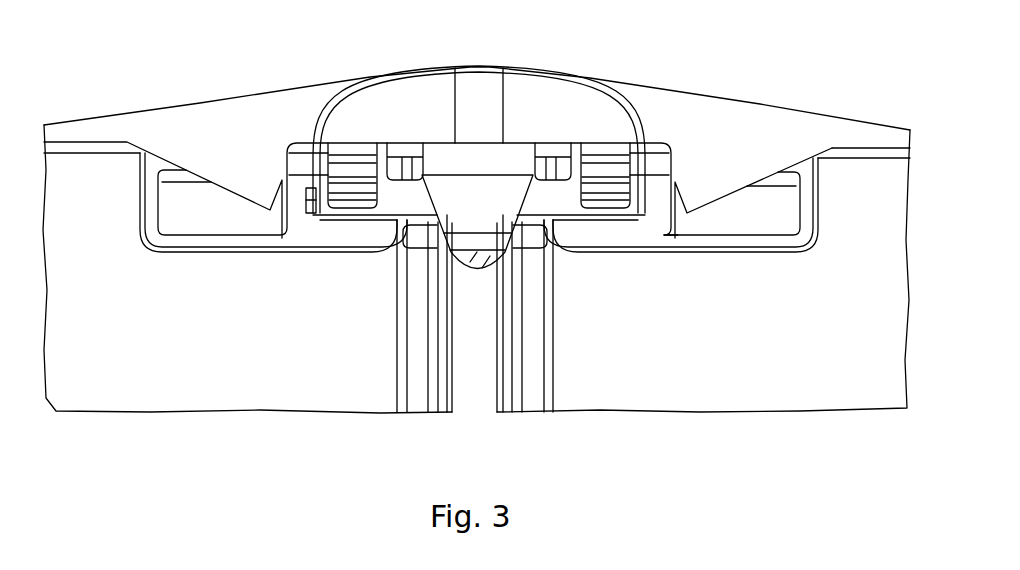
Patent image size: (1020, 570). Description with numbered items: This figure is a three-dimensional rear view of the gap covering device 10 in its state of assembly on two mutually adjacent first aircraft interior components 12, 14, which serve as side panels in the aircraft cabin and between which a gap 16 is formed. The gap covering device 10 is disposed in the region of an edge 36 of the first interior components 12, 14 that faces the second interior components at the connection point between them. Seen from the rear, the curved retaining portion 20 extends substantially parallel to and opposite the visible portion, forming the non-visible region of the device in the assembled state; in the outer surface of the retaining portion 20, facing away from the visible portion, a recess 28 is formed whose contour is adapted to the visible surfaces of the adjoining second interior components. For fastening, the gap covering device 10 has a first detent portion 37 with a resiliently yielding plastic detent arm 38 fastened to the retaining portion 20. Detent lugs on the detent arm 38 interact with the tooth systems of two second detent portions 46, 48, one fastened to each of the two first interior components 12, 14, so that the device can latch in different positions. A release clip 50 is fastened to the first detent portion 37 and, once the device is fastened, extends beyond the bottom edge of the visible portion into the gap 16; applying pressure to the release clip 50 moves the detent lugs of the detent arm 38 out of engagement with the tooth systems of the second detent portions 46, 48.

The gap covering device 10 is at (744, 72).
The first aircraft interior component 12 is at (301, 395).
The first aircraft interior component 14 is at (668, 398).
The gap 16 is at (474, 383).
The retaining portion 20 is at (203, 115).
The recess 28 is at (383, 100).
The edge 36 is at (858, 152).
The first detent portion 37 is at (303, 200).
The resiliently yielding detent arm 38 is at (483, 162).
The second detent portion 46 is at (315, 222).
The second detent portion 48 is at (636, 225).
The release clip 50 is at (478, 258).